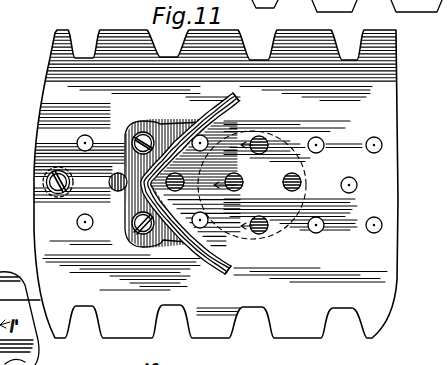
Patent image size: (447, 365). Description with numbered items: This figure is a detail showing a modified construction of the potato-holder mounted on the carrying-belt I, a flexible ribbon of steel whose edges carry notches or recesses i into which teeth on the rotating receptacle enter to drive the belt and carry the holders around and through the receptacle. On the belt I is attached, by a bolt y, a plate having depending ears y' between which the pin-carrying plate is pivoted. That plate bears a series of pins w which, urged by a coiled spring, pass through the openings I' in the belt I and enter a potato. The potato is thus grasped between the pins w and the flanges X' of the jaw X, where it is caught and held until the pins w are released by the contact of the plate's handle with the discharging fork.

The carrying-belt I is at (215, 175).
The openings in the belt I' is at (215, 182).
The notches or recesses i is at (216, 184).
The bolt y is at (126, 172).
The depending ears y' is at (116, 241).
The jaw X is at (190, 183).
The flanges of the jaw X' is at (230, 192).
The pins w is at (262, 216).